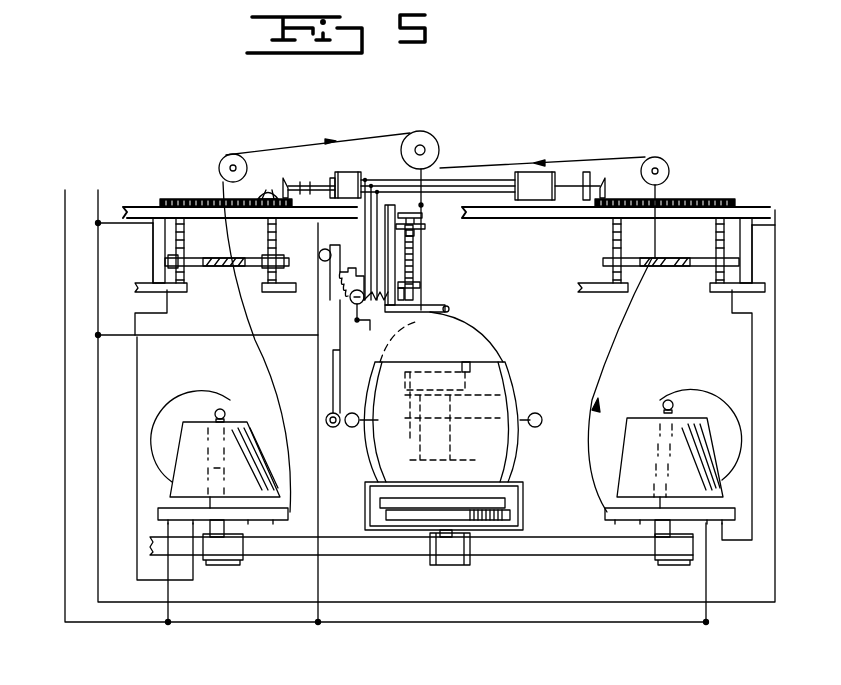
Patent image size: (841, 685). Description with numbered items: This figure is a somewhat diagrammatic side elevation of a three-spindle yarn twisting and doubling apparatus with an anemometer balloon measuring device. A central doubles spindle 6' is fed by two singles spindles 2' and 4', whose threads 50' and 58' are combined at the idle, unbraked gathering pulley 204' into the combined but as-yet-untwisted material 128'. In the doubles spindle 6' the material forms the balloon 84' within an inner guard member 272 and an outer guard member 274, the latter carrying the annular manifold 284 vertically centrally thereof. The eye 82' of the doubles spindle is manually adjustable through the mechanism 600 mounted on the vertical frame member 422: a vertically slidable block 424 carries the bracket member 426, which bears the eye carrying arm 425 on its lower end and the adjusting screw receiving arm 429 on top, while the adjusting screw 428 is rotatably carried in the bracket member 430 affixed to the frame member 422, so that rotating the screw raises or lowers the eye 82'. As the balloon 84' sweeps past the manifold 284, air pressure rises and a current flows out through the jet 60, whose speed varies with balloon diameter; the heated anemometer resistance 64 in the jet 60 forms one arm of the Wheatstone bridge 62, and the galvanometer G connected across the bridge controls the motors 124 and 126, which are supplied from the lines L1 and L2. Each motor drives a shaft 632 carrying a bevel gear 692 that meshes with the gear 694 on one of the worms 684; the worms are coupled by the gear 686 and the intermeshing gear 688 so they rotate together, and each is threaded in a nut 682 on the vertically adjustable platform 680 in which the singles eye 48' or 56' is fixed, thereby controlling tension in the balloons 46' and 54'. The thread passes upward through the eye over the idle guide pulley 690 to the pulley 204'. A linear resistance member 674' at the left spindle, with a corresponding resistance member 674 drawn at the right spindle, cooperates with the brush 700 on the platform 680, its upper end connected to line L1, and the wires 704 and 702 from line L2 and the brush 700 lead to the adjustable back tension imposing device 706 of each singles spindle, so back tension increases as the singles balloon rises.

The singles spindle 2' is at (215, 433).
The singles spindle 4' is at (679, 422).
The doubles spindle 6' is at (448, 418).
The balloon 46' is at (266, 347).
The singles balloon guiding eye 48' is at (228, 278).
The thread 50' is at (318, 135).
The balloon 54' is at (620, 385).
The singles balloon guiding eye 56' is at (671, 246).
The thread 58' is at (619, 139).
The jet 60 is at (343, 410).
The Wheatstone bridge 62 is at (346, 266).
The anemometer resistance 64 is at (334, 428).
The eye 82' is at (436, 301).
The balloon 84' is at (462, 422).
The motor 124 is at (346, 180).
The motor 126 is at (548, 175).
The combined material 128' is at (542, 154).
The gathering pulley 204' is at (440, 210).
The inner guard member 272 is at (452, 411).
The outer guard member 274 is at (528, 412).
The annular manifold 284 is at (538, 428).
The vertical frame member 422 is at (396, 306).
The slidable block 424 is at (412, 320).
The eye carrying arm 425 is at (422, 318).
The bracket member 426 is at (408, 300).
The adjusting screw 428 is at (416, 254).
The adjusting screw receiving arm 429 is at (412, 282).
The bracket member 430 is at (420, 228).
The eye adjusting mechanism 600 is at (432, 262).
The shaft 632 is at (330, 178).
The right frame post 674 is at (758, 230).
The linear resistance member 674' is at (126, 261).
The vertically adjustable platform 680 is at (202, 268).
The nut 682 is at (168, 262).
The worm 684 is at (186, 232).
The gear 686 is at (170, 199).
The intermeshing gear 688 is at (210, 199).
The idle guide pulley 690 is at (233, 153).
The bevel gear 692 is at (290, 187).
The gear 694 is at (268, 198).
The brush 700 is at (155, 290).
The wire 702 is at (135, 397).
The wire 704 is at (170, 593).
The back tension imposing device 706 is at (226, 414).
The galvanometer G is at (350, 310).
The current supply line L1 is at (756, 621).
The current supply line L2 is at (690, 637).